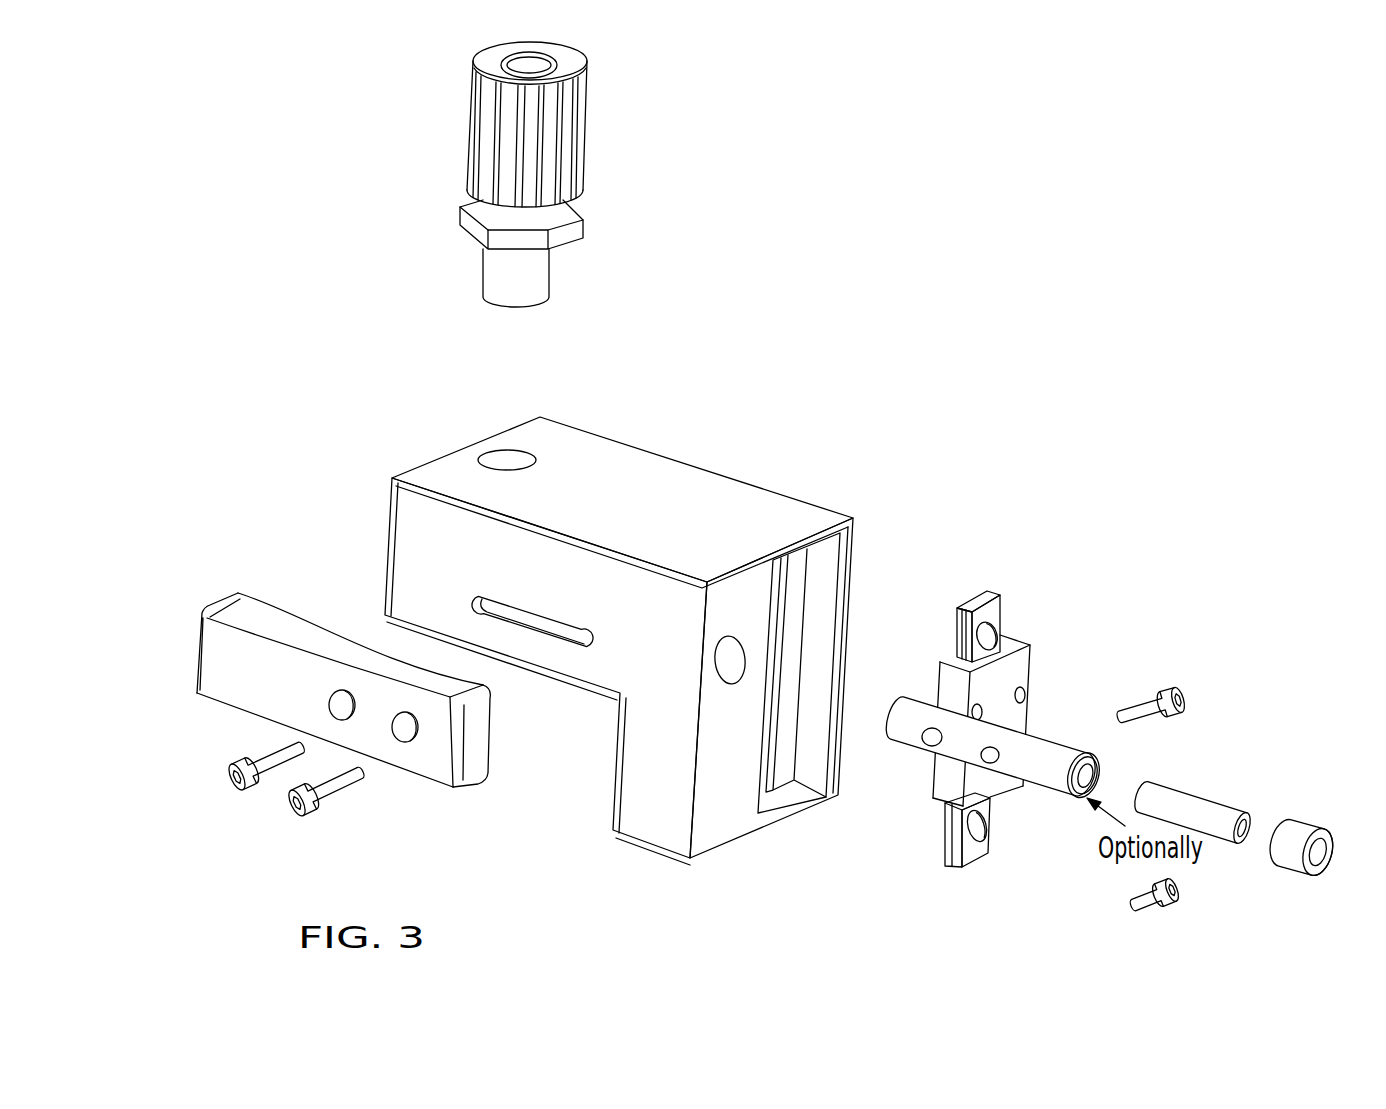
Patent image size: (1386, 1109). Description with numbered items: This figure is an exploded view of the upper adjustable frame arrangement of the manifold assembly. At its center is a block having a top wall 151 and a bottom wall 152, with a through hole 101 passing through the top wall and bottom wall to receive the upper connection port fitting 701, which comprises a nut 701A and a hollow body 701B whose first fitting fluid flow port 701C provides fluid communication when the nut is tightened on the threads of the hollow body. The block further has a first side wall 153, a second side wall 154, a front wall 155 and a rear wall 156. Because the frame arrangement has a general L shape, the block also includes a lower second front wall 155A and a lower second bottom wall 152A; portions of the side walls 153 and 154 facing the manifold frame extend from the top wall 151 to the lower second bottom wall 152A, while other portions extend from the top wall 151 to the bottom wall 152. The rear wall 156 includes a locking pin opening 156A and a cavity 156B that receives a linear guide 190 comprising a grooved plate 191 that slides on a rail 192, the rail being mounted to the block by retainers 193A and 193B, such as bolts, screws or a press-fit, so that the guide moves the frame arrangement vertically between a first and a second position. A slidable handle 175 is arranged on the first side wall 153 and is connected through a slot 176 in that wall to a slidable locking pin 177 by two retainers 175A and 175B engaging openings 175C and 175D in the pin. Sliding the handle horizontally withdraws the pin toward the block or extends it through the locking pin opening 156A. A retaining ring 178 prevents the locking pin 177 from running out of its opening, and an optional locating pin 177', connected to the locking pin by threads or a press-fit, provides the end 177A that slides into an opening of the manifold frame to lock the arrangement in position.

The upper connection port fitting 701 is at (208, 128).
The nut 701A is at (472, 126).
The hollow body 701B is at (466, 228).
The first fitting fluid flow port 701C is at (552, 281).
The through hole 101 is at (498, 460).
The second side wall 154 is at (667, 448).
The top wall 151 is at (797, 517).
The first side wall 153 is at (412, 558).
The front wall 155 is at (392, 490).
The bottom wall 152 is at (563, 680).
The lower second front wall 155A is at (617, 785).
The lower second bottom wall 152A is at (652, 845).
The slot 176 is at (528, 623).
The rear wall 156 is at (718, 823).
The locking pin opening 156A is at (725, 668).
The cavity 156B is at (813, 588).
The slidable handle 175 is at (223, 662).
The retainer 175A is at (285, 806).
The retainer 175B is at (225, 773).
The opening 175C is at (932, 736).
The opening 175D is at (1043, 772).
The slidable locking pin 177 is at (975, 809).
The linear guide 190 is at (1038, 657).
The grooved plate 191 is at (1020, 640).
The rail 192 is at (975, 602).
The retainer 193A is at (1177, 692).
The retainer 193B is at (1158, 893).
The locating pin 177' is at (1212, 835).
The end 177A is at (1233, 840).
The retaining ring 178 is at (1298, 827).